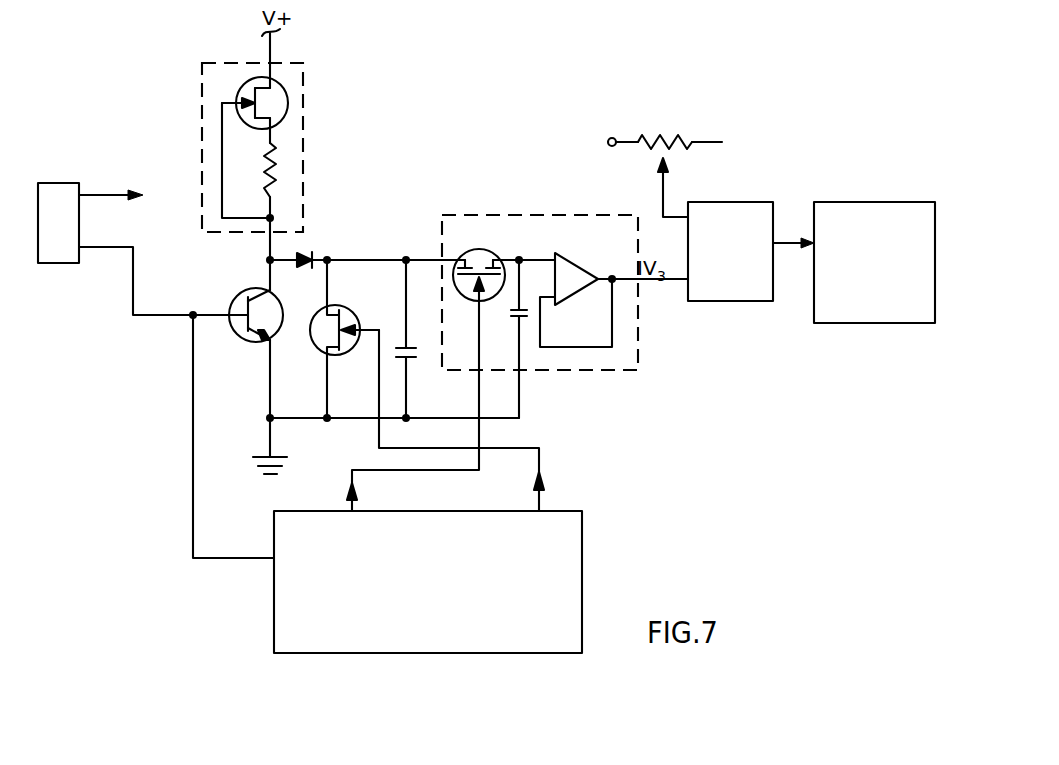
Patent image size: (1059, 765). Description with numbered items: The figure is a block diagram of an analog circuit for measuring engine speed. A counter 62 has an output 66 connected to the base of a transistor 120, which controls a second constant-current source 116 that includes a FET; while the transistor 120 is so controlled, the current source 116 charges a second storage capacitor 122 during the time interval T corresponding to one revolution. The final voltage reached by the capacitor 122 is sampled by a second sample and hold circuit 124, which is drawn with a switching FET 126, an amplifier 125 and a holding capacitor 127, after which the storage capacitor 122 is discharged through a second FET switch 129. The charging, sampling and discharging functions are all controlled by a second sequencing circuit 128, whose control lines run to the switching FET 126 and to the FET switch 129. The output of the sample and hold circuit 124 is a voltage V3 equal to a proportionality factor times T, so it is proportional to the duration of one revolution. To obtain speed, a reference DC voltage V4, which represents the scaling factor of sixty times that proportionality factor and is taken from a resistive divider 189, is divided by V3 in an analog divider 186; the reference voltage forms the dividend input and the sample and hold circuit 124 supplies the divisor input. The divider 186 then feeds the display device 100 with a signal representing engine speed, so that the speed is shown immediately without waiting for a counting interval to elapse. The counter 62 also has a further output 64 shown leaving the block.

The counter 62 is at (50, 183).
The output signal 64 is at (105, 193).
The output of the counter 66 is at (132, 287).
The display device 100 is at (852, 200).
The second constant-current source 116 is at (293, 63).
The transistor 120 is at (237, 337).
The second storage capacitor 122 is at (413, 362).
The second sample and hold circuit 124 is at (517, 332).
The amplifier 125 is at (587, 263).
The field effect transistor switch 126 is at (485, 248).
The capacitor 127 is at (510, 313).
The second sequencing circuit 128 is at (562, 508).
The second FET switch 129 is at (347, 308).
The analog divider 186 is at (723, 198).
The resistive divider 189 is at (686, 131).